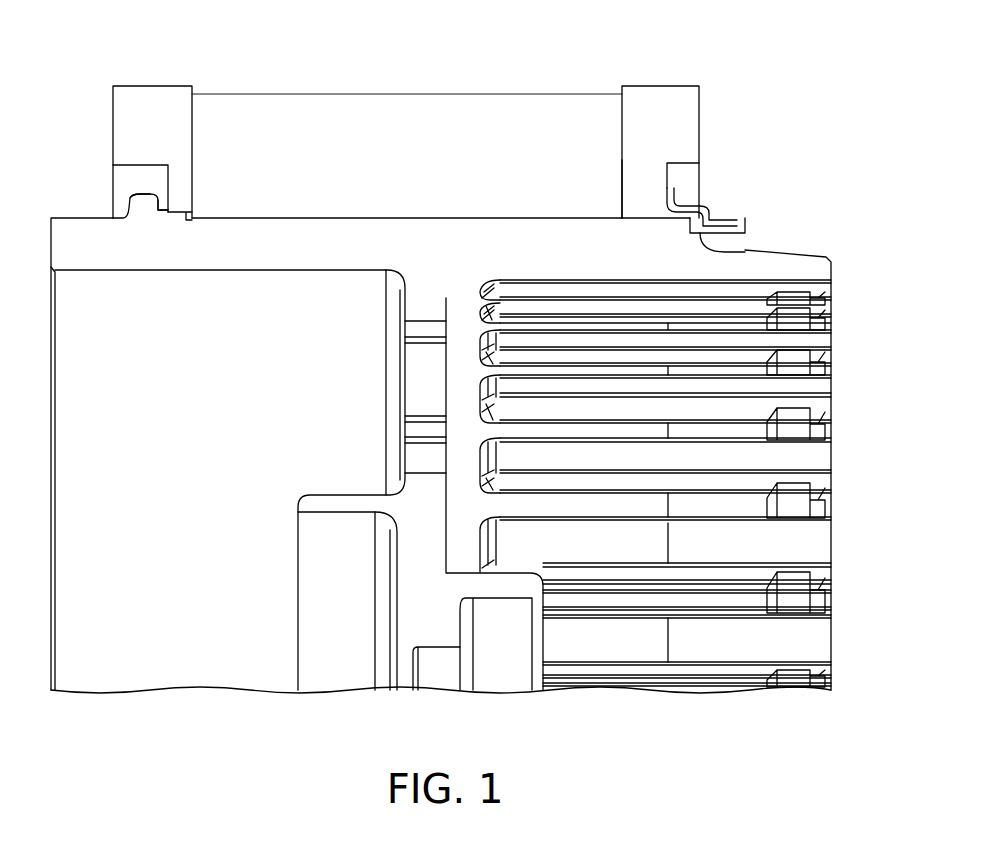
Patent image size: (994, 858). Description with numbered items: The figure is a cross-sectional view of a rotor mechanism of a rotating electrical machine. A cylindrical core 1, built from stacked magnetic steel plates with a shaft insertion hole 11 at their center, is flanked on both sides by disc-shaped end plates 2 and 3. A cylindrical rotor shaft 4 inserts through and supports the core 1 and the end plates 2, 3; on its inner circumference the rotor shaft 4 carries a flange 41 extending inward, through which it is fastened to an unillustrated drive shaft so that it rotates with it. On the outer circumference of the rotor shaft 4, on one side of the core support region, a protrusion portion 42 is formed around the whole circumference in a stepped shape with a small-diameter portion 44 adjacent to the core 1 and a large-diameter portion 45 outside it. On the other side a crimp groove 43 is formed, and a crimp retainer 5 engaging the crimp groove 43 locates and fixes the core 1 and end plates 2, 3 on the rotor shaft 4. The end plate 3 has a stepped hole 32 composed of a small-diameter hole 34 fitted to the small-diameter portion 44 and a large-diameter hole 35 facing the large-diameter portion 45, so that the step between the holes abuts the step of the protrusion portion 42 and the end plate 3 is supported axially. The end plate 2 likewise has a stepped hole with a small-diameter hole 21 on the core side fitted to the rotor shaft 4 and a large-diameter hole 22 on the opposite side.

The core 1 is at (450, 94).
The end plate 2 is at (660, 86).
The end plate 3 is at (157, 86).
The rotor shaft 4 is at (82, 218).
The crimp retainer 5 is at (712, 205).
The shaft insertion hole 11 is at (357, 217).
The small-diameter hole 21 is at (645, 217).
The large-diameter hole 22 is at (681, 163).
The stepped hole 32 is at (218, 48).
The small-diameter hole 34 is at (190, 210).
The large-diameter hole 35 is at (153, 163).
The flange 41 is at (425, 392).
The protrusion portion 42 is at (203, 322).
The crimp groove 43 is at (745, 237).
The small-diameter portion 44 is at (176, 212).
The large-diameter portion 45 is at (153, 200).